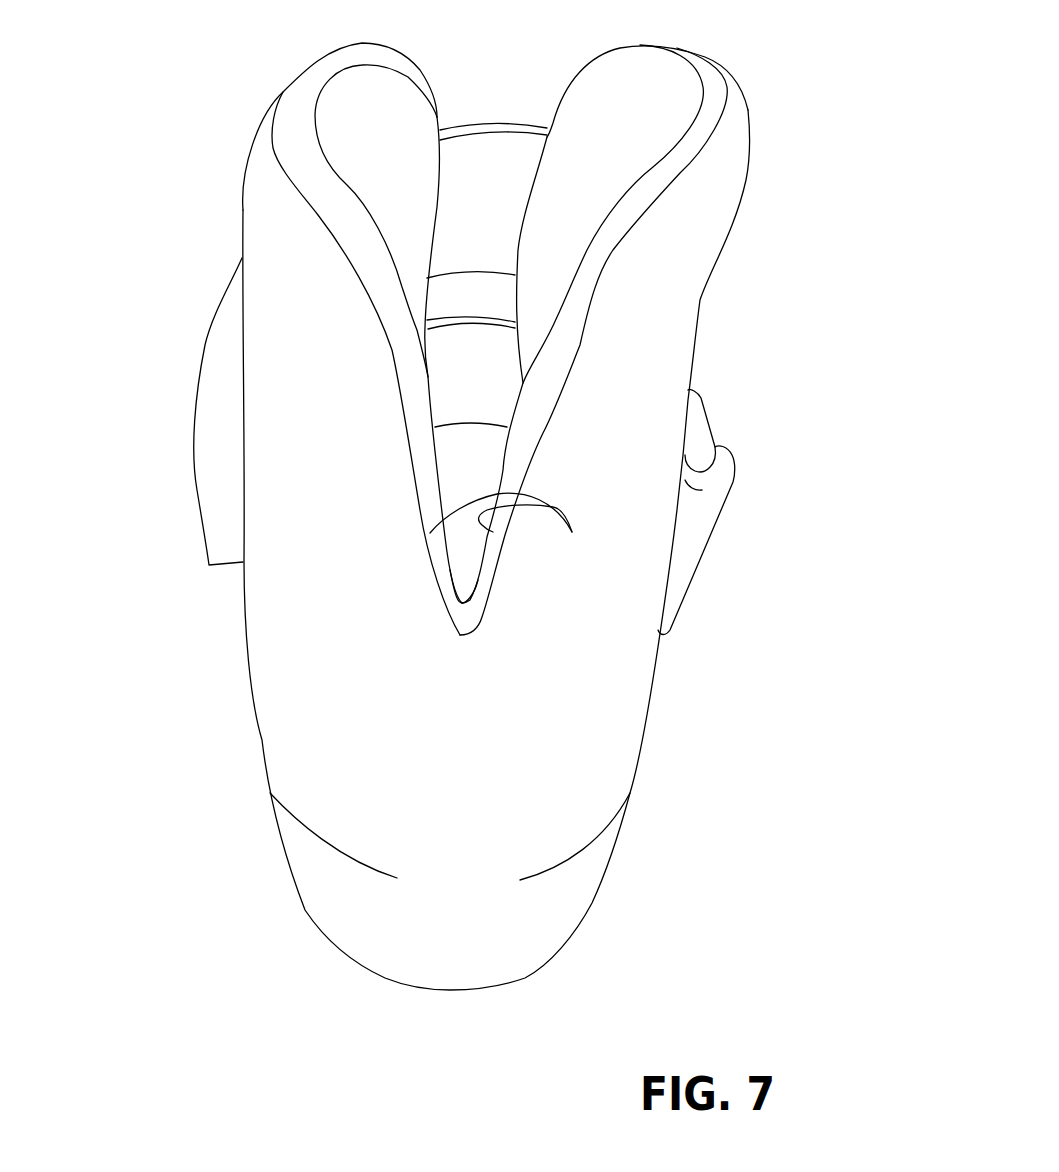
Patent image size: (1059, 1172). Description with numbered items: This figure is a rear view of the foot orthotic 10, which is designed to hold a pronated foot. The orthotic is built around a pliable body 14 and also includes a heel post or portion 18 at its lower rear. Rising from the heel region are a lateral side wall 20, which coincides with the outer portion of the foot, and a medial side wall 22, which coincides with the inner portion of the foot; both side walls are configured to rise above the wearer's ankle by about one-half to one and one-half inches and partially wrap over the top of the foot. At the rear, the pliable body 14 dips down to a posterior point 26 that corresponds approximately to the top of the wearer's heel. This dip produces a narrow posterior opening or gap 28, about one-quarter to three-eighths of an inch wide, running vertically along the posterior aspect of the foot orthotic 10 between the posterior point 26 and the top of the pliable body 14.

The foot orthotic 10 is at (824, 182).
The pliable body 14 is at (207, 683).
The heel post or portion 18 is at (375, 943).
The lateral side wall 20 is at (673, 348).
The medial side wall 22 is at (268, 360).
The posterior point 26 is at (482, 618).
The posterior opening or gap 28 is at (510, 544).